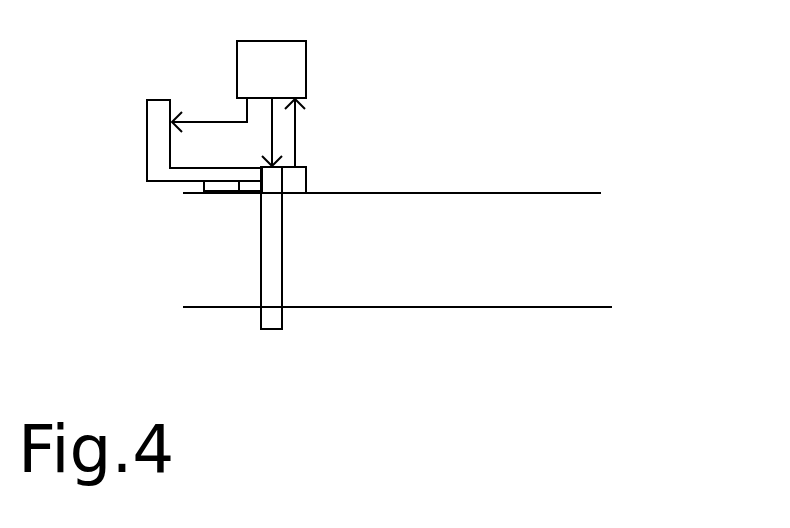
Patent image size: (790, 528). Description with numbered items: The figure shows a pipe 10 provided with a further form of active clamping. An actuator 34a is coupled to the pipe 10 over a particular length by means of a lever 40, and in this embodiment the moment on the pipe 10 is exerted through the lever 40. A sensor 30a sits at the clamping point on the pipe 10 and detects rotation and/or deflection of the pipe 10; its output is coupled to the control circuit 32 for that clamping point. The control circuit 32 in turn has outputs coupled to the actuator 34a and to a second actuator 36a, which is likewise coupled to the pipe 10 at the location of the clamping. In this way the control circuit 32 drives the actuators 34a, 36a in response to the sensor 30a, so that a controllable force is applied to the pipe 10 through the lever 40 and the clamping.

The pipe 10 is at (443, 307).
The control circuit 32 is at (306, 75).
The actuator 34a is at (147, 137).
The sensor 30a is at (306, 183).
The actuator 36a is at (269, 329).
The lever 40 is at (203, 191).